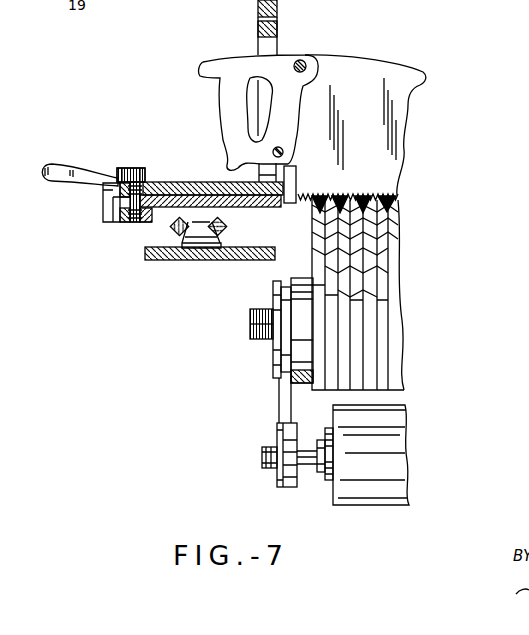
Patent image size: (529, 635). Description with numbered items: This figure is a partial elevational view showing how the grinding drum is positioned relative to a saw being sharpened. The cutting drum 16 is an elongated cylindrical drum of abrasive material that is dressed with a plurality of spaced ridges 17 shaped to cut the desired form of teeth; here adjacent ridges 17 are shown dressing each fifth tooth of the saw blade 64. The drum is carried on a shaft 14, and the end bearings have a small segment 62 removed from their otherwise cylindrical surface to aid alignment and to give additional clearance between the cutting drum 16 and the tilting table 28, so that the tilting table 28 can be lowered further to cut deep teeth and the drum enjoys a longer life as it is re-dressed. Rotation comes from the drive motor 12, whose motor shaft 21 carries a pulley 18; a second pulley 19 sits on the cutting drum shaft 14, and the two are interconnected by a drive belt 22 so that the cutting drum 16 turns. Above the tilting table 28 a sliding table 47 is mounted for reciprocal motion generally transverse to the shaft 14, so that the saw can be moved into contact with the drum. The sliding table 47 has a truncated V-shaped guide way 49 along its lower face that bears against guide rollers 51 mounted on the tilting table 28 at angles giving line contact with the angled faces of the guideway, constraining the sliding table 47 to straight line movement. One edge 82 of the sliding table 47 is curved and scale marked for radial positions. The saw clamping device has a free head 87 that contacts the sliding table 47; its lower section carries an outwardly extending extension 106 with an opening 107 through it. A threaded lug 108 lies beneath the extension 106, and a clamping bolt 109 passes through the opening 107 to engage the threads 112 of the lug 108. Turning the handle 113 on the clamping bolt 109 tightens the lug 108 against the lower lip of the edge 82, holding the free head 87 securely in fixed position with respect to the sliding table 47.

The free head 87 is at (277, 26).
The saw blade 64 is at (388, 70).
The handle 113 is at (63, 170).
The outwardly extending extension 106 is at (118, 168).
The clamping bolt 109 is at (131, 168).
The opening 107 is at (152, 182).
The threaded lug 108 is at (103, 190).
The threads 112 is at (127, 223).
The curved edge 82 is at (145, 222).
The truncated V-shaped guide way 49 is at (178, 219).
The guide rollers 51 is at (225, 231).
The sliding table 47 is at (262, 207).
The tilting table 28 is at (218, 261).
The segment 62 is at (302, 282).
The cutting drum 16 is at (398, 247).
The ridges 17 is at (367, 305).
The shaft 14 is at (249, 328).
The pulley 19 is at (272, 357).
The drive belt 22 is at (279, 408).
The motor shaft 21 is at (262, 457).
The pulley 18 is at (277, 482).
The drive motor 12 is at (395, 443).